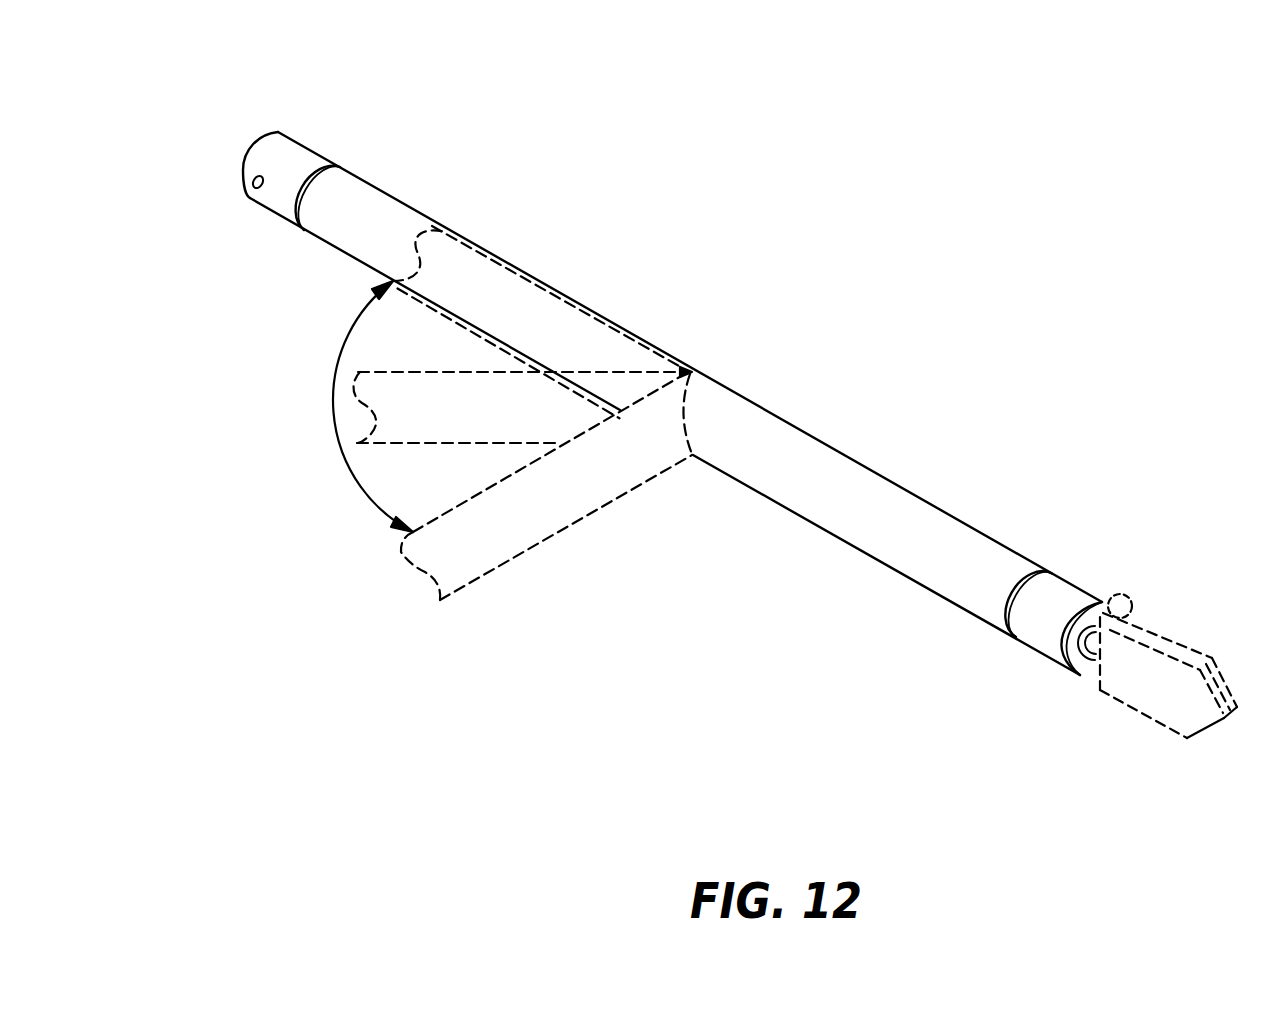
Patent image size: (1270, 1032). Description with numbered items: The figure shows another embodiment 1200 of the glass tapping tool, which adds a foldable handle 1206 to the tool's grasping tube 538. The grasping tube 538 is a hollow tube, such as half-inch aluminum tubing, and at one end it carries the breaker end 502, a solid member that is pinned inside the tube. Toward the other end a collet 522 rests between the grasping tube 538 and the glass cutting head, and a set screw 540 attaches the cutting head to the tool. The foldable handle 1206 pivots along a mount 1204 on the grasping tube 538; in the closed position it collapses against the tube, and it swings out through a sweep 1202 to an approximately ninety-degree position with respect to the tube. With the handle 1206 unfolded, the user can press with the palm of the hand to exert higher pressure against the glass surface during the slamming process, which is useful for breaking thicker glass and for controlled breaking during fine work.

The embodiment of the glass tapping tool 1200 is at (950, 846).
The breaker end 502 is at (263, 135).
The grasping tube 538 is at (490, 265).
The collet 522 is at (1065, 598).
The set screw 540 is at (1180, 652).
The rotation angle 1202 is at (337, 428).
The mount 1204 is at (687, 415).
The foldable handle 1206 is at (533, 530).